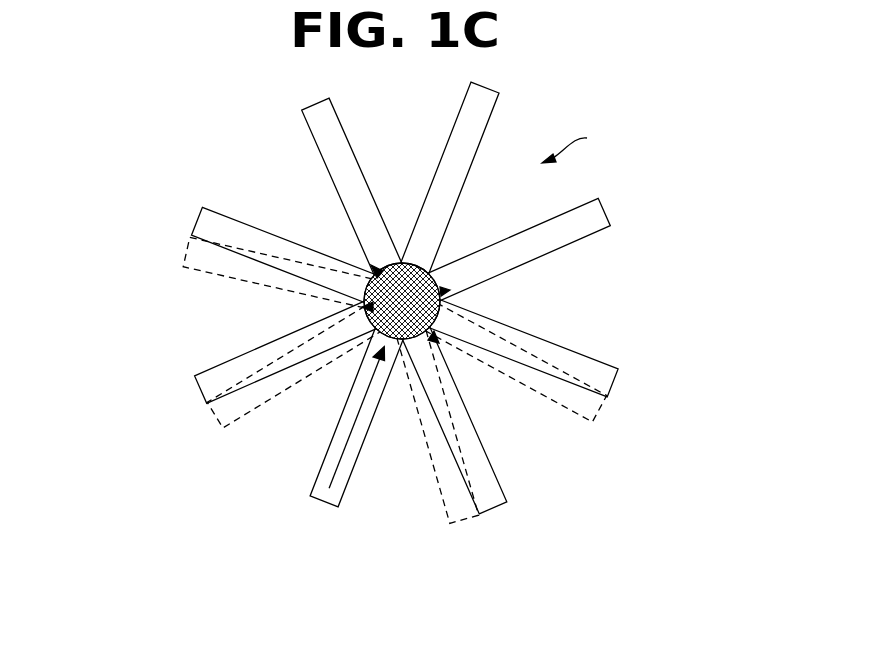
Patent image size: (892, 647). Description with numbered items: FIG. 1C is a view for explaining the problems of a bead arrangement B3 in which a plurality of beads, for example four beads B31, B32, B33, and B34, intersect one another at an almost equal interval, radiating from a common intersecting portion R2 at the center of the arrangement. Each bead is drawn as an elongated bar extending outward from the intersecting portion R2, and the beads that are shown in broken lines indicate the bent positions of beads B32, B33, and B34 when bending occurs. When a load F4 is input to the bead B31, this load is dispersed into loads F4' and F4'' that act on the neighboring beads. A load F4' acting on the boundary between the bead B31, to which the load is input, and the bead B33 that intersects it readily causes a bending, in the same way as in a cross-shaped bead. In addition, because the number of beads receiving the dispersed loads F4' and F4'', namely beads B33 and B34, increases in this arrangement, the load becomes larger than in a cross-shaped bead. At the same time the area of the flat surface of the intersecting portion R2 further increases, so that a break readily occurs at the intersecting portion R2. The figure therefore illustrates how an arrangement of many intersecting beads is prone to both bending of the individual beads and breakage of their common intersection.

The bead B3 is at (584, 143).
The bead B31 is at (484, 82).
The bead B32 is at (606, 208).
The bead B33 is at (188, 243).
The bead B34 is at (505, 505).
The intersecting portion R2 is at (412, 262).
The load F4 is at (368, 426).
The load F4' is at (418, 265).
The load F4'' is at (393, 355).